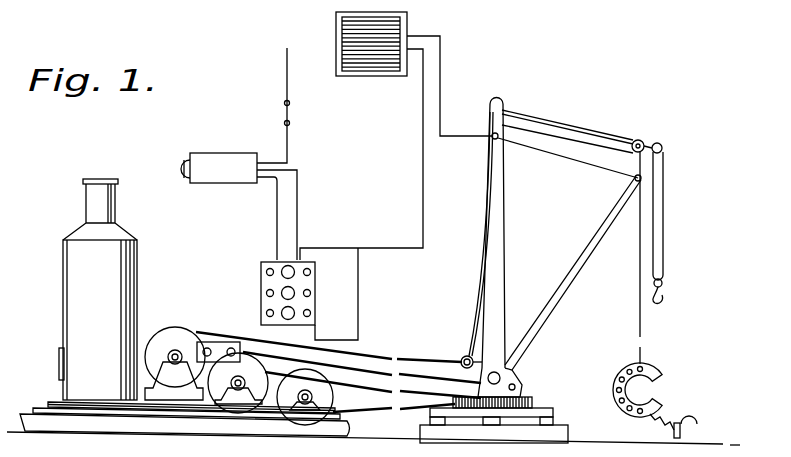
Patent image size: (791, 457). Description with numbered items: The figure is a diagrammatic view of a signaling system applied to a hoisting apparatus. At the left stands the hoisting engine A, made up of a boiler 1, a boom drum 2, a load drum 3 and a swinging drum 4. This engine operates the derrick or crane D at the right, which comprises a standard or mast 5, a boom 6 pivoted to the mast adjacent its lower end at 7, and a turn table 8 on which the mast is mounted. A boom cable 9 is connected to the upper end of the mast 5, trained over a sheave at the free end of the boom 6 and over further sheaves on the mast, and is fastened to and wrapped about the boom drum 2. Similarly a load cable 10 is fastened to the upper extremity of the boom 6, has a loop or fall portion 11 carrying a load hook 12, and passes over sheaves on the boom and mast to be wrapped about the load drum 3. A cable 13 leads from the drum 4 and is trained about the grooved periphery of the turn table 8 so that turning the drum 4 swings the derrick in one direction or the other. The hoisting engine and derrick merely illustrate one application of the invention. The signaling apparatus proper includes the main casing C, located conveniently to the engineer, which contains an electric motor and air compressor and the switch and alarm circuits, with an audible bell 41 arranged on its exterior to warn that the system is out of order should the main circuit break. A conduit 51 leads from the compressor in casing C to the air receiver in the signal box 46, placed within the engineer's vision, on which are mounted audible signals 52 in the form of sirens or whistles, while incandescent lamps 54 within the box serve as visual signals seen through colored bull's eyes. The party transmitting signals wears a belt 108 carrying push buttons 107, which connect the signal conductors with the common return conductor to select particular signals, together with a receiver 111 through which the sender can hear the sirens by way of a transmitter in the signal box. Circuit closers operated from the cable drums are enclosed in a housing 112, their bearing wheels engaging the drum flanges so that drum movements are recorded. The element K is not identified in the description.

The boiler 1 is at (78, 282).
The boom drum 2 is at (163, 334).
The load drum 3 is at (222, 390).
The swinging drum 4 is at (284, 397).
The standard or mast 5 is at (500, 240).
The boom 6 is at (581, 280).
The pivot 7 is at (521, 388).
The turn table 8 is at (537, 403).
The boom cable 9 is at (480, 230).
The load cable 10 is at (597, 238).
The loop or fall portion 11 is at (661, 238).
The load hook 12 is at (668, 287).
The cable 13 is at (377, 414).
The bell 41 is at (186, 163).
The signal box 46 is at (279, 267).
The conduit 51 is at (276, 202).
The audible signals 52 is at (297, 268).
The incandescent lamp 54 is at (265, 294).
The push buttons 107 is at (600, 418).
The belt 108 is at (661, 378).
The receiver 111 is at (683, 431).
The housing 112 is at (217, 343).
The hoisting engine A is at (166, 260).
The main casing C is at (228, 158).
The derrick or crane D is at (520, 183).
The battery / resistor K is at (408, 26).